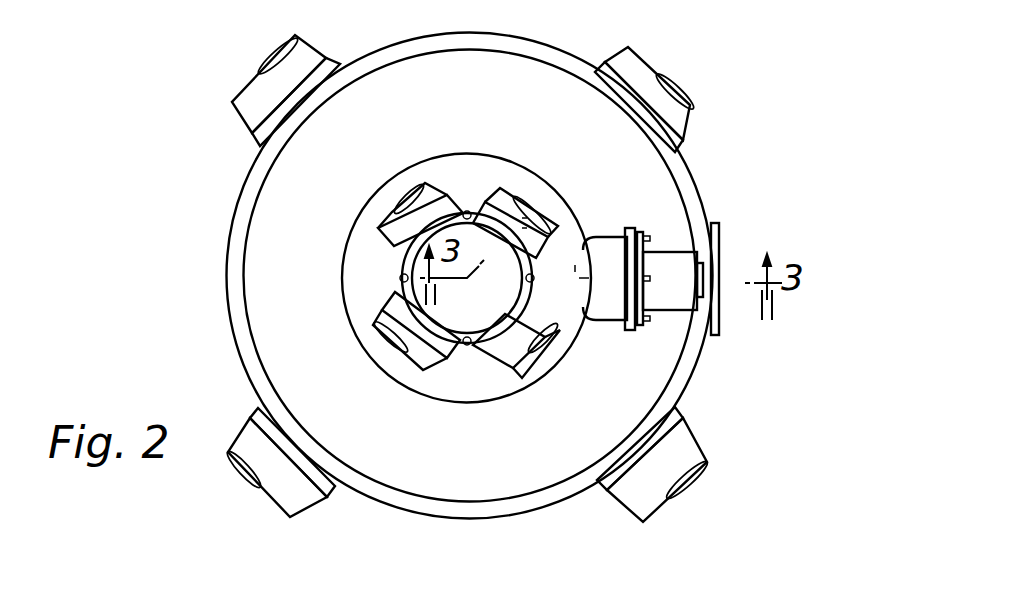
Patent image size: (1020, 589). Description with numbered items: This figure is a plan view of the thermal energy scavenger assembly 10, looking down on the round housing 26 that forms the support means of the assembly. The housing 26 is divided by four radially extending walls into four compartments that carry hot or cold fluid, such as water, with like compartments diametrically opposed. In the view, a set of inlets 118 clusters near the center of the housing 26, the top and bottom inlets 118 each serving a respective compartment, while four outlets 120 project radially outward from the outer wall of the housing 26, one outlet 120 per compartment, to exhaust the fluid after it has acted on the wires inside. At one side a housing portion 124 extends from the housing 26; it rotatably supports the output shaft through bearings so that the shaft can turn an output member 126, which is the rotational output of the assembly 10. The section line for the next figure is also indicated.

The thermal energy scavenger assembly 10 is at (731, 131).
The housing 26 is at (543, 40).
The inlets 118 is at (380, 225).
The outlets 120 is at (248, 96).
The housing portion 124 is at (675, 262).
The output member 126 is at (720, 334).